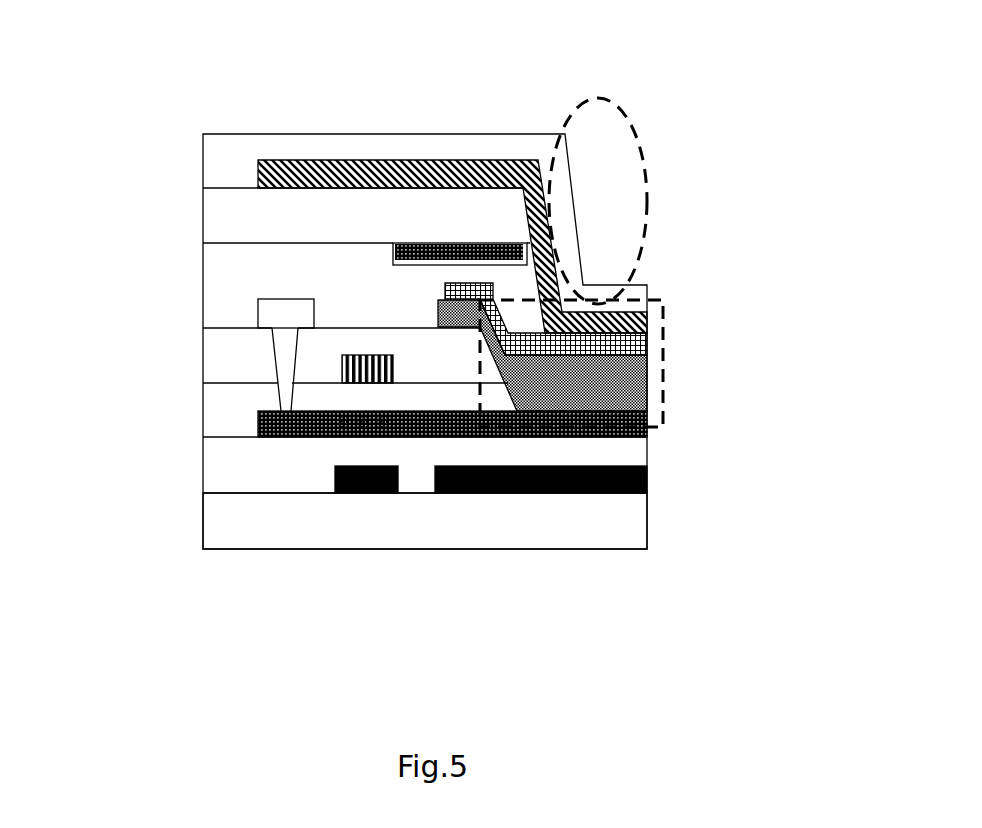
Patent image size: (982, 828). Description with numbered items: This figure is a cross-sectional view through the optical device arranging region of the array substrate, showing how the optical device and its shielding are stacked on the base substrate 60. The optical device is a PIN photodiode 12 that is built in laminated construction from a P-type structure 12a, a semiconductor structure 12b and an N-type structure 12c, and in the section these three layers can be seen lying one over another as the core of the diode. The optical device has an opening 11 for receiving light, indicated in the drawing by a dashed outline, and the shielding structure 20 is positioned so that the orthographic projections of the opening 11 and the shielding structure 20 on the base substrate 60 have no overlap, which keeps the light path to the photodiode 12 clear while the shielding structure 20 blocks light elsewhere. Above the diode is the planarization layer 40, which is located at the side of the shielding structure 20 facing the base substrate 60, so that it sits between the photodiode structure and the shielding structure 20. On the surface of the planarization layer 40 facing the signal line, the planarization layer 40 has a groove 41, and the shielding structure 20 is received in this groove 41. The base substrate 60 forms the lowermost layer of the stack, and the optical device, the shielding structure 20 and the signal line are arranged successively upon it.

The opening 11 is at (625, 115).
The PIN photodiode 12 is at (657, 427).
The P-type structure 12a is at (647, 385).
The semiconductor structure 12b is at (640, 346).
The N-type structure 12c is at (637, 325).
The shielding structure 20 is at (492, 243).
The planarization layer 40 is at (230, 272).
The groove 41 is at (393, 252).
The base substrate 60 is at (558, 522).